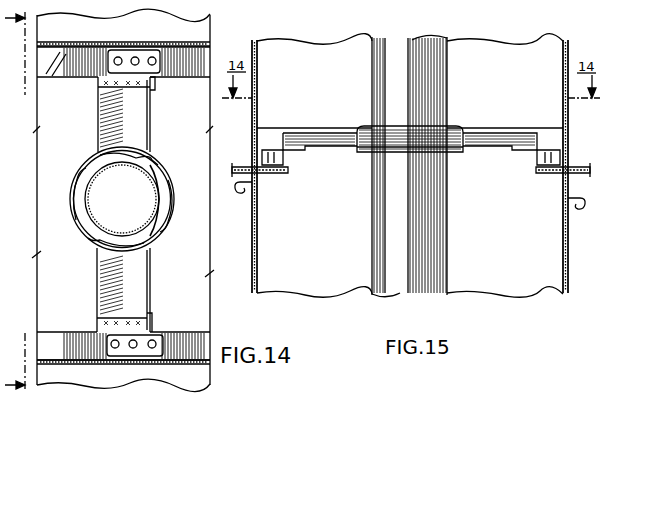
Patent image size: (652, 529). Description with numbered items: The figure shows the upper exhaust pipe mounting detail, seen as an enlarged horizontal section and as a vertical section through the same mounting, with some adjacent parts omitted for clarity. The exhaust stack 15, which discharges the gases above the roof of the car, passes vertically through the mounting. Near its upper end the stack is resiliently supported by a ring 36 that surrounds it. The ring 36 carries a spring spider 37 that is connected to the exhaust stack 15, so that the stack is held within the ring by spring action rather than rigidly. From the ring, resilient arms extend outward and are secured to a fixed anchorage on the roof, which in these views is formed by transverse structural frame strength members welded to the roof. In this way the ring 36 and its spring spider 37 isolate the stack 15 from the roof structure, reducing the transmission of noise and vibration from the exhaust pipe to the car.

In FIG. 14, the exhaust stack 15 is at (90, 199).
In FIG. 15, the exhaust stack 15 is at (385, 210).
In FIG. 14, the ring 36 is at (174, 214).
In FIG. 15, the ring 36 is at (450, 128).
In FIG. 14, the spring spider 37 is at (160, 228).